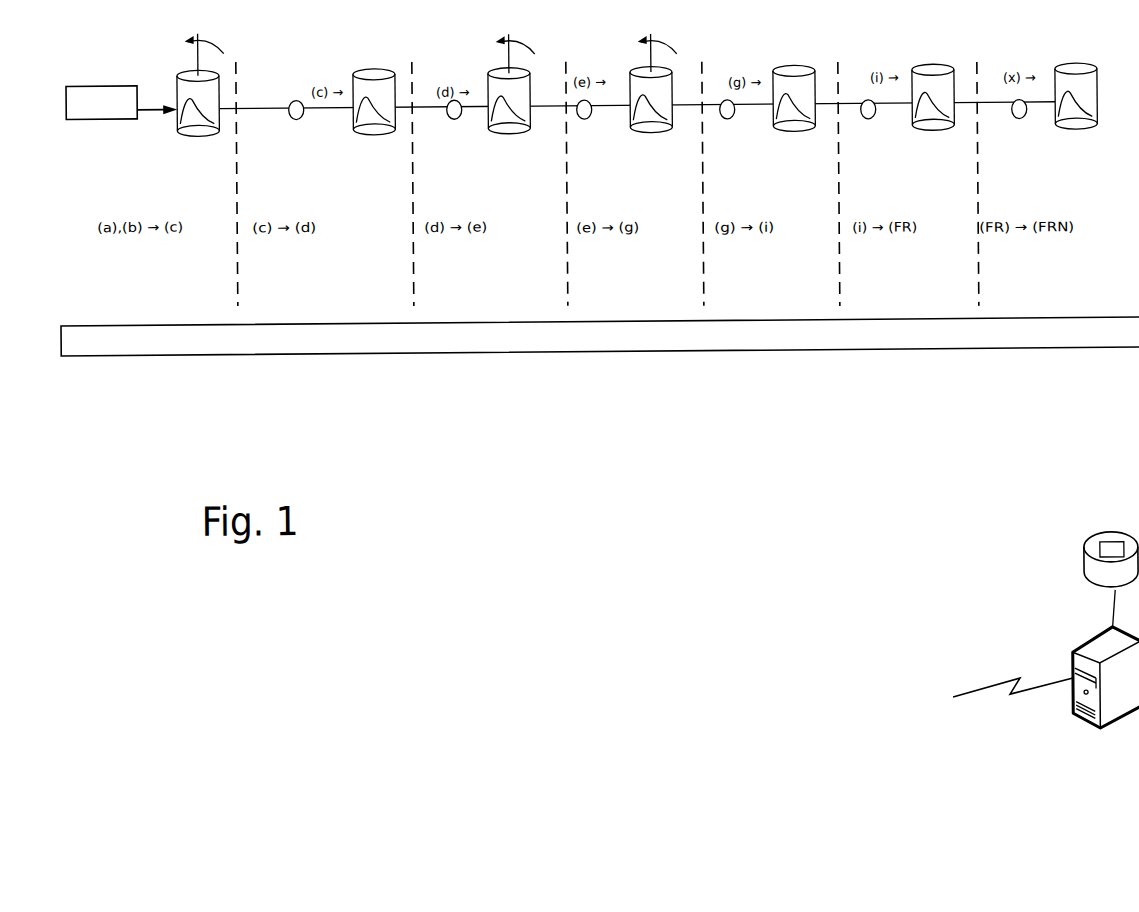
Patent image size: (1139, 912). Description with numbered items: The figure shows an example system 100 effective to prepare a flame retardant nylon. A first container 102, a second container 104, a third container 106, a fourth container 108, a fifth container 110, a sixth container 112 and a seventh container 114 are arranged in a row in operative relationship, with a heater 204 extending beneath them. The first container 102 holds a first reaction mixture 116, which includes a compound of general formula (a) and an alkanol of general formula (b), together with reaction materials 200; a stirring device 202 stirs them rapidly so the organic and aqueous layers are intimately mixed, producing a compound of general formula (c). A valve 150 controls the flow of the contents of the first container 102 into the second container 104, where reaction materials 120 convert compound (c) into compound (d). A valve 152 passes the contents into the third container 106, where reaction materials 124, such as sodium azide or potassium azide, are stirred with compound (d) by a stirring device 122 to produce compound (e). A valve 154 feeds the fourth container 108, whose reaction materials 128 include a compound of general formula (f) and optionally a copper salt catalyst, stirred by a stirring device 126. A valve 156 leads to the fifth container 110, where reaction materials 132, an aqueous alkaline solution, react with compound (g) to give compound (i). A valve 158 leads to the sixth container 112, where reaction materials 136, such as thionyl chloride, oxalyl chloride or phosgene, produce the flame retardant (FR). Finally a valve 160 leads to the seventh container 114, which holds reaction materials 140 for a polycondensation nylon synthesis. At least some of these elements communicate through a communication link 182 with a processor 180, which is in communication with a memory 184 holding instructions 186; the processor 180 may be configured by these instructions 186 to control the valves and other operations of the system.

The system 100 is at (502, 502).
The first container 102 is at (188, 93).
The second container 104 is at (379, 114).
The third container 106 is at (499, 94).
The fourth container 108 is at (638, 91).
The fifth container 110 is at (803, 111).
The sixth container 112 is at (940, 111).
The seventh container 114 is at (1086, 111).
The first reaction mixture 116 is at (107, 84).
The reaction materials 120 is at (375, 102).
The stirring device 122 is at (496, 51).
The reaction materials 124 is at (510, 102).
The stirring device 126 is at (635, 48).
The reaction materials 128 is at (652, 101).
The reaction materials 132 is at (795, 101).
The reaction materials 136 is at (934, 101).
The reaction materials 140 is at (1077, 100).
The valve 150 is at (284, 123).
The valve 152 is at (444, 131).
The valve 154 is at (588, 128).
The valve 156 is at (724, 126).
The valve 158 is at (864, 123).
The valve 160 is at (1011, 121).
The processor 180 is at (1080, 732).
The communication link 182 is at (1007, 705).
The memory 184 is at (1093, 558).
The instructions 186 is at (1098, 546).
The reaction materials 200 is at (199, 104).
The stirring device 202 is at (185, 52).
The heater 204 is at (573, 357).